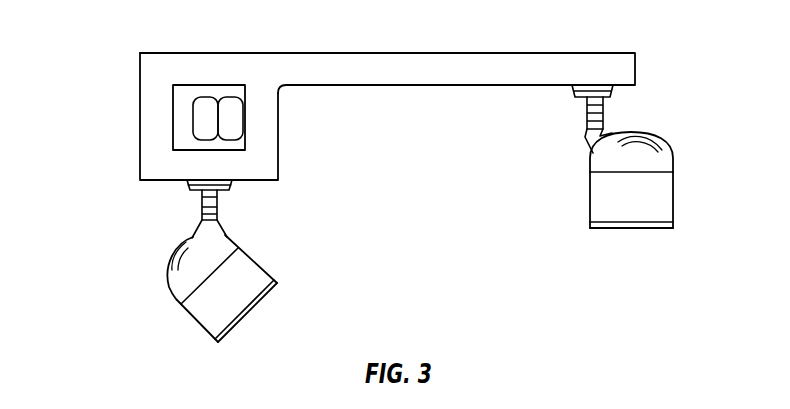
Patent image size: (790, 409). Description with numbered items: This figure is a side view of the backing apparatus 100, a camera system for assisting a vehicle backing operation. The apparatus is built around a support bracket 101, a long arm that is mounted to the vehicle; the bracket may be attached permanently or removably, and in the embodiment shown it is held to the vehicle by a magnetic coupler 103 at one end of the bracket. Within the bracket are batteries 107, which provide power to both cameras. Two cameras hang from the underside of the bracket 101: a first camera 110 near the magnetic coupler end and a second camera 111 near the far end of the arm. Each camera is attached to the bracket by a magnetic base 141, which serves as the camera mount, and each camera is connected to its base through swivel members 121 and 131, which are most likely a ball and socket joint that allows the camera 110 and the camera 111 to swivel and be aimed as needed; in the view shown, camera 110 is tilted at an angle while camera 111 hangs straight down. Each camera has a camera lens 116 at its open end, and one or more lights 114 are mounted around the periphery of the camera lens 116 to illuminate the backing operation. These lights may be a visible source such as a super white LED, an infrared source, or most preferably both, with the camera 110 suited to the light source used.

The backing apparatus 100 is at (113, 47).
The support bracket 101 is at (546, 53).
The magnetic coupler 103 is at (140, 106).
The batteries 107 is at (237, 118).
The camera 110 is at (262, 266).
The camera 111 is at (678, 186).
The lights 114 is at (218, 343).
The camera lens 116 is at (255, 305).
The ball and socket joint member 121 is at (201, 222).
The ball and socket joint member 131 is at (218, 206).
The magnetic base 141 is at (184, 182).